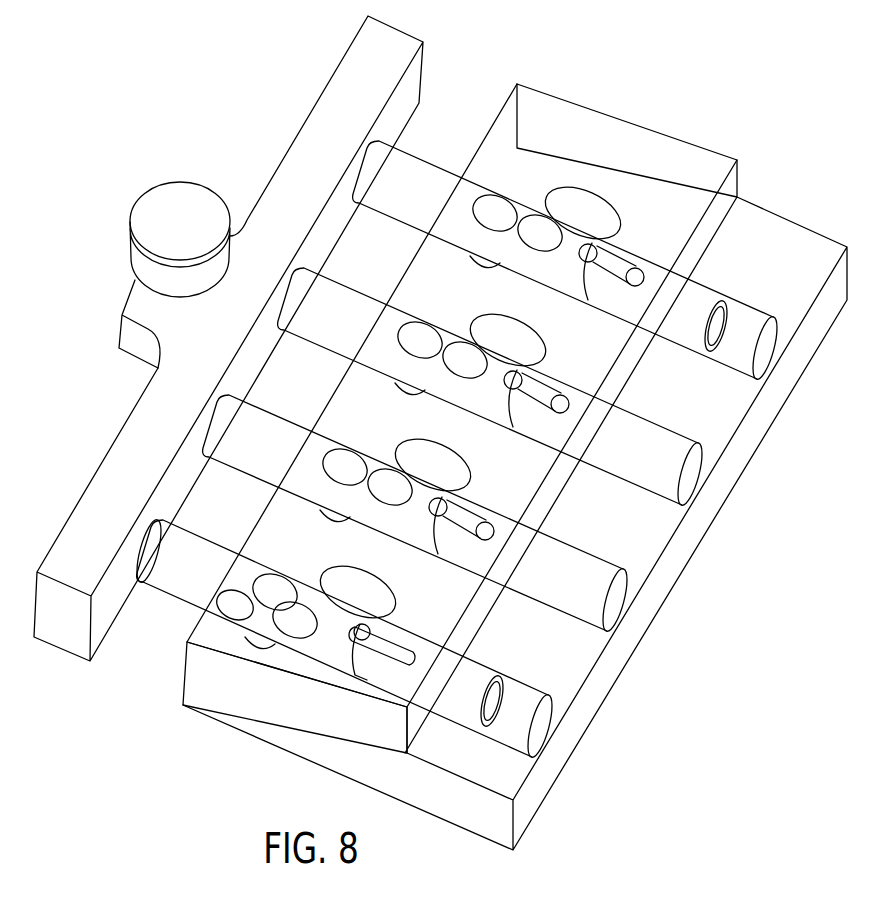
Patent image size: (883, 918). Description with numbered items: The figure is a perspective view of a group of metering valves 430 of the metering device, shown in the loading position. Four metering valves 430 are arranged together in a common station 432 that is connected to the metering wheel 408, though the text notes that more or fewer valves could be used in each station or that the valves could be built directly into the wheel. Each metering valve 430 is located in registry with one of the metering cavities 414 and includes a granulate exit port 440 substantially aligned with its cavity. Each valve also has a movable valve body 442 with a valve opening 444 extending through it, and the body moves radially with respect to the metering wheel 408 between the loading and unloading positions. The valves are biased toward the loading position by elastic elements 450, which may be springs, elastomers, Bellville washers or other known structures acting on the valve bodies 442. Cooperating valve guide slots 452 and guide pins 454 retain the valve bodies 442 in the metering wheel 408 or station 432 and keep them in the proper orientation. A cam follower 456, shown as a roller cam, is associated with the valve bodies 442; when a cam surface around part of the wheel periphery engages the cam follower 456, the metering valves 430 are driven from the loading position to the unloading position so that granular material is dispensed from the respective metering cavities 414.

The metering wheel 408 is at (823, 305).
The metering cavities 414 is at (596, 203).
The metering valves 430 is at (663, 235).
The station 432 is at (663, 148).
The granulate exit port 440 is at (277, 647).
The valve body 442 is at (503, 320).
The valve opening 444 is at (233, 605).
The elastic elements 450 is at (693, 310).
The valve guide slots 452 is at (403, 647).
The guide pins 454 is at (357, 628).
The cam follower 456 is at (393, 35).